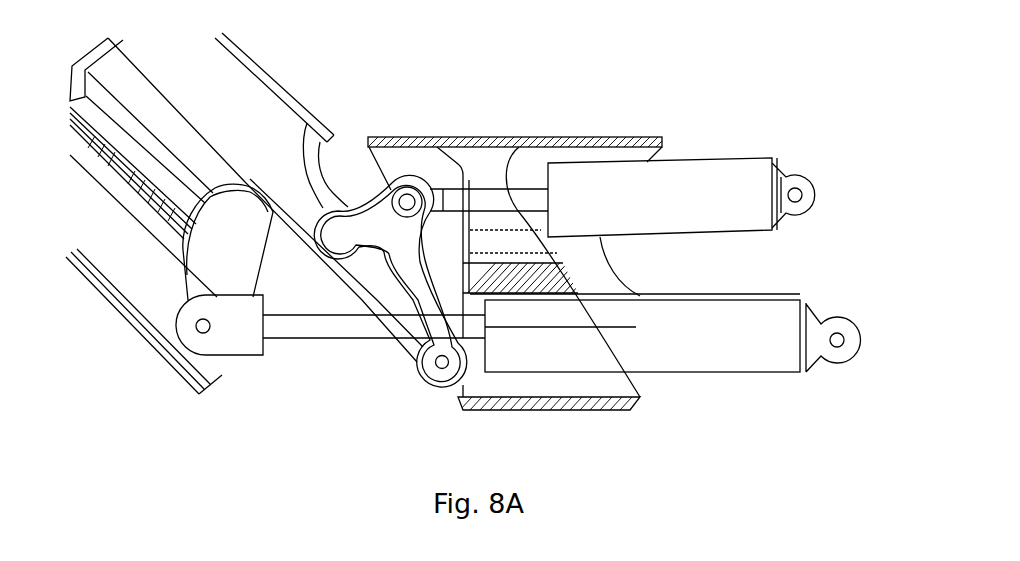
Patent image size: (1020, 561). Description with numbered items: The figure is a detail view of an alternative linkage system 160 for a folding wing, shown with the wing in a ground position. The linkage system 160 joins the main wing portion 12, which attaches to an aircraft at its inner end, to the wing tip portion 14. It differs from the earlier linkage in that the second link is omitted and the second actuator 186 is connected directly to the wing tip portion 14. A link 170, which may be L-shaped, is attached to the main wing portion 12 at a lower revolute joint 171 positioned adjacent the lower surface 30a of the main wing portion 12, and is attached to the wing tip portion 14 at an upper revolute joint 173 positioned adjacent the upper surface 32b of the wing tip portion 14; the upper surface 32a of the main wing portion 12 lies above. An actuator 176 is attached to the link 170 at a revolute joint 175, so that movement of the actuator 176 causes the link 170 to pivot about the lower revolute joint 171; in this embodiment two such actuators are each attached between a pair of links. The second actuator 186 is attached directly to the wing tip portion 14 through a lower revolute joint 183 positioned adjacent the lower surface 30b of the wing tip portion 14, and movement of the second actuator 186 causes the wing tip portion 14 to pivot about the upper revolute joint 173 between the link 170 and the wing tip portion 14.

The main wing portion 12 is at (548, 128).
The wing tip portion 14 is at (147, 403).
The lower surface of the main wing portion 30a is at (597, 412).
The lower surface of the wing tip portion 30b is at (118, 317).
The upper surface of the main wing portion 32a is at (597, 137).
The upper surface of the wing tip portion 32b is at (254, 69).
The alternative linkage system 160 is at (294, 428).
The link 170 is at (370, 268).
The lower revolute joint 171 is at (436, 402).
The upper revolute joint 173 is at (310, 122).
The revolute joint 175 is at (413, 197).
The actuator 176 is at (713, 180).
The lower revolute joint 183 is at (218, 358).
The second actuator 186 is at (723, 360).